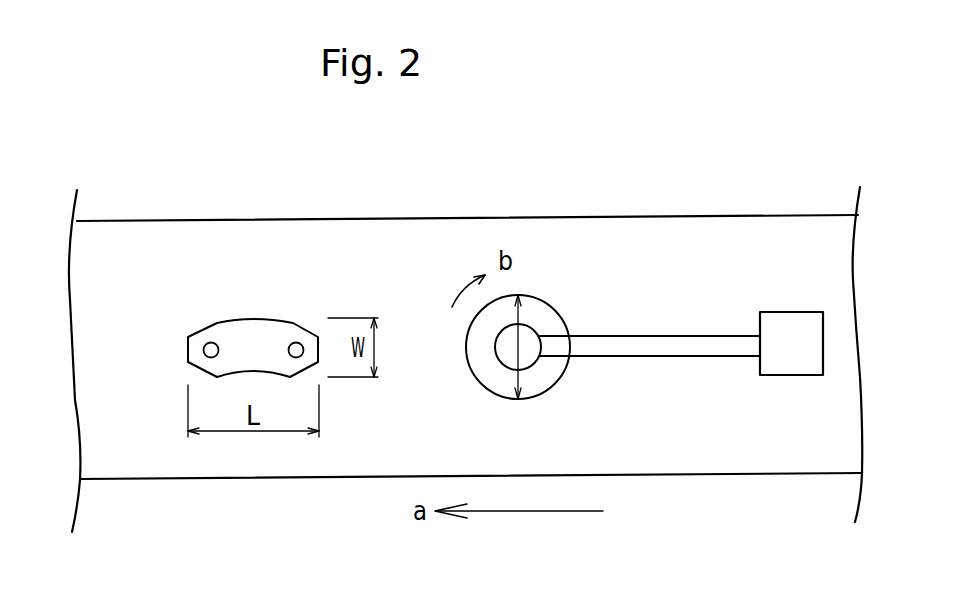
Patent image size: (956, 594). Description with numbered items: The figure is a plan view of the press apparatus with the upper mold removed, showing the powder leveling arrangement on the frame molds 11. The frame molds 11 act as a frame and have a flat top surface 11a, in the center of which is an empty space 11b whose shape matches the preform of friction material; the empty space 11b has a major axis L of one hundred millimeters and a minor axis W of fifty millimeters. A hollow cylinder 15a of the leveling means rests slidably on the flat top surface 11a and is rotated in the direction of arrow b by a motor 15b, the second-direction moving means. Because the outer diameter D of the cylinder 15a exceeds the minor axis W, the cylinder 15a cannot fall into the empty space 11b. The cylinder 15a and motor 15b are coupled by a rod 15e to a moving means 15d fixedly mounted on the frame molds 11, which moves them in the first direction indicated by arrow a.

The frame molds 11 is at (494, 217).
The flat top surface 11a is at (183, 283).
The empty space 11b is at (252, 335).
The hollow cylinder 15a is at (553, 303).
The motor 15b is at (505, 363).
The moving means 15d is at (792, 312).
The rod 15e is at (692, 335).